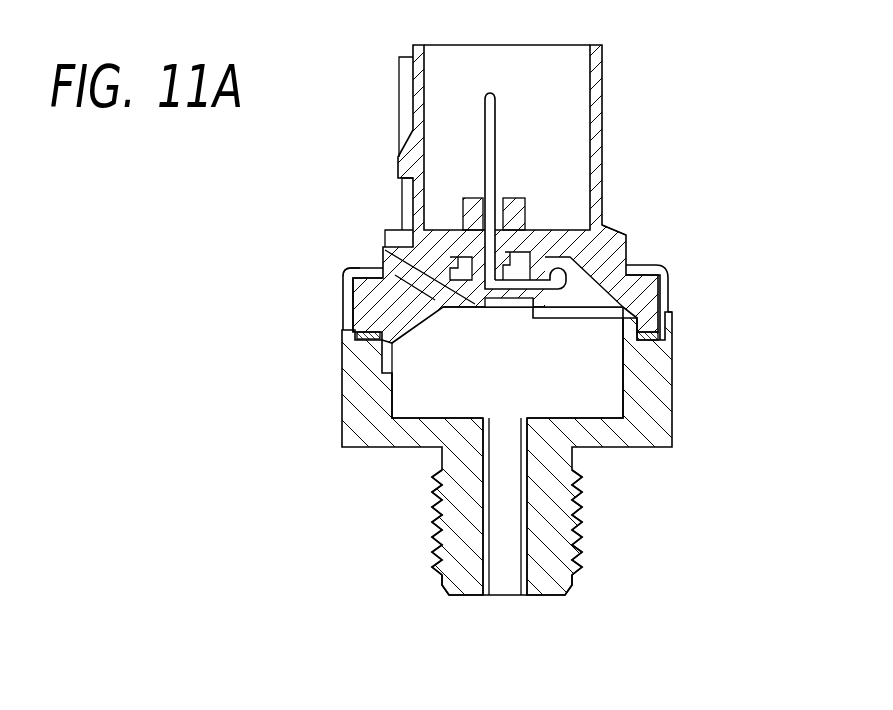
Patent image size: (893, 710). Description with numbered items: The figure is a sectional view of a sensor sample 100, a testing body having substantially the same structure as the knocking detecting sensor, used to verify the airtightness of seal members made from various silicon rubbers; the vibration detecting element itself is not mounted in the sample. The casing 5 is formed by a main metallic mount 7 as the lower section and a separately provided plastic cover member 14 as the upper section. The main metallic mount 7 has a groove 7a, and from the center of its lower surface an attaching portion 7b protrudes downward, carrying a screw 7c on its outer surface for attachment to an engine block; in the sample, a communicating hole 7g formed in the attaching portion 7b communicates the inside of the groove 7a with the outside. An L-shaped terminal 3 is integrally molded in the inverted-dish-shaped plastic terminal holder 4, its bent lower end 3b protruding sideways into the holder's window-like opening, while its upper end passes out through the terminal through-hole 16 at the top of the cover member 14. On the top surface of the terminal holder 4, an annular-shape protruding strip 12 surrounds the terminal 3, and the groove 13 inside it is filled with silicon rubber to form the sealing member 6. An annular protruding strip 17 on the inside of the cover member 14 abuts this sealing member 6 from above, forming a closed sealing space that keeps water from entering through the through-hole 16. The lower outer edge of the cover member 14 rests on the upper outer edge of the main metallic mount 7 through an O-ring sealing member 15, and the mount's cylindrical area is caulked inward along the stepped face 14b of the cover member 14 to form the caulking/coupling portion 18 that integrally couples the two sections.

The sensor sample 100 is at (684, 74).
The terminal 3 is at (495, 126).
The lower end of the terminal 3b is at (605, 243).
The terminal holder 4 is at (345, 303).
The casing 5 is at (670, 252).
The sealing member 6 is at (465, 232).
The main metallic mount 7 is at (657, 410).
The groove 7a is at (392, 400).
The attaching portion 7b is at (566, 583).
The screw 7c is at (582, 543).
The communicating hole 7g is at (488, 553).
The annular-shape protruding strip 12 is at (382, 250).
The groove 13 is at (519, 257).
The cover member 14 is at (347, 283).
The stepped face 14b is at (660, 268).
The sealing member 15 is at (363, 341).
The terminal through-hole 16 is at (452, 270).
The annular protruding strip 17 is at (407, 293).
The caulking/coupling portion 18 is at (360, 265).